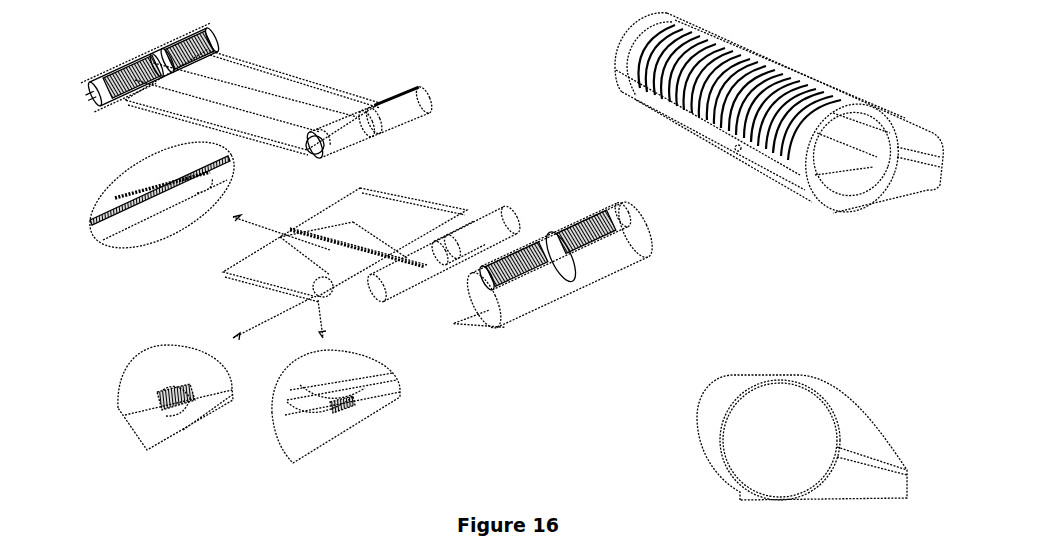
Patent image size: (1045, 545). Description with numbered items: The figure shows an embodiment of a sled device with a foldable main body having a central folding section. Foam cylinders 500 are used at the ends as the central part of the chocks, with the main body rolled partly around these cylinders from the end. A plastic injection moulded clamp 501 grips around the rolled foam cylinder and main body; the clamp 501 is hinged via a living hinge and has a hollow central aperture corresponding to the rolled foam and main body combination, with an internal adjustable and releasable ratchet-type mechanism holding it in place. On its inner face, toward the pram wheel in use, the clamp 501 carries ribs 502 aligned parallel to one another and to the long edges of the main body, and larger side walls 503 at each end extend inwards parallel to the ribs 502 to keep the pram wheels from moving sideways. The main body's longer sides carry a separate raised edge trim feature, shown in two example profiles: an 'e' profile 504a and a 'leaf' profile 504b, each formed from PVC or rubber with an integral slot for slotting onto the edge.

The foam cylinders 500 is at (310, 145).
The clamp 501 is at (742, 380).
The ribs 502 is at (722, 122).
The side walls 503 is at (628, 62).
The 'e' profile 504a is at (148, 428).
The 'leaf' profile 504b is at (300, 425).